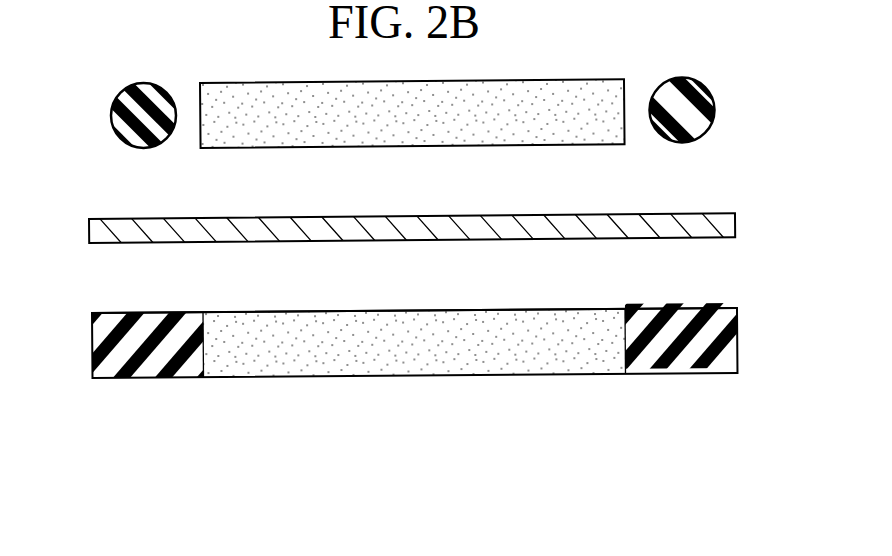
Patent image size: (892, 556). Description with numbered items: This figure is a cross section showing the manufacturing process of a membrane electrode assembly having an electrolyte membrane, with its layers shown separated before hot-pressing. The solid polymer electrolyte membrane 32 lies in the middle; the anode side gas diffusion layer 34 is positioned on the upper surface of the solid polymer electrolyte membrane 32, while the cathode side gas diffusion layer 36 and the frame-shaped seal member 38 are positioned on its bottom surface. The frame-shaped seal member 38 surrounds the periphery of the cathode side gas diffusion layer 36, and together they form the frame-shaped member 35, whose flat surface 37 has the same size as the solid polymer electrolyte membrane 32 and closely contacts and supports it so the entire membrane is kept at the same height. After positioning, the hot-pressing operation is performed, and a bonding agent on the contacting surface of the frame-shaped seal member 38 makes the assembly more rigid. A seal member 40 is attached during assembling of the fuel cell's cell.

The solid polymer electrolyte membrane 32 is at (725, 228).
The anode side gas diffusion layer 34 is at (430, 134).
The frame-shaped member 35 is at (536, 386).
The cathode side gas diffusion layer 36 is at (432, 345).
The flat surface 37 is at (133, 313).
The frame-shaped seal member 38 is at (152, 357).
The seal member 40 is at (114, 118).